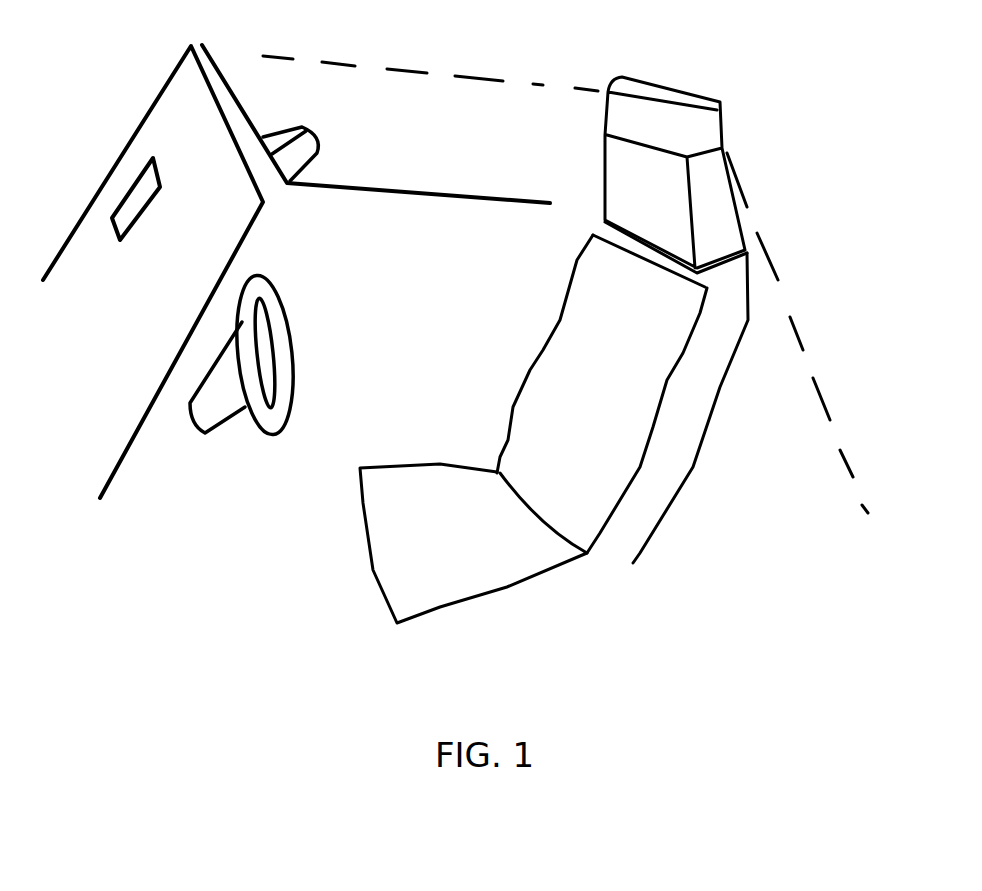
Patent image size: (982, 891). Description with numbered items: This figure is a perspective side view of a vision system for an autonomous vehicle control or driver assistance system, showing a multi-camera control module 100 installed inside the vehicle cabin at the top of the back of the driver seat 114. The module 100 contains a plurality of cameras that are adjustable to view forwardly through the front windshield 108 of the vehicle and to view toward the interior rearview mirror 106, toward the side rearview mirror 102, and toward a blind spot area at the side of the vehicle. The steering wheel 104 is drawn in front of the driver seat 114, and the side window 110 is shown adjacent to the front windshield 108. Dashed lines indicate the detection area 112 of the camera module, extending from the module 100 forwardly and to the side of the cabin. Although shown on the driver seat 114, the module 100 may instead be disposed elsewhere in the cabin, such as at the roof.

The multi-camera control module 100 is at (698, 127).
The side rearview mirror 102 is at (297, 143).
The steering wheel 104 is at (273, 310).
The interior rearview mirror 106 is at (148, 177).
The front windshield 108 is at (178, 102).
The side window 110 is at (263, 111).
The detection area of camera module 112 is at (478, 73).
The driver seat 114 is at (658, 487).